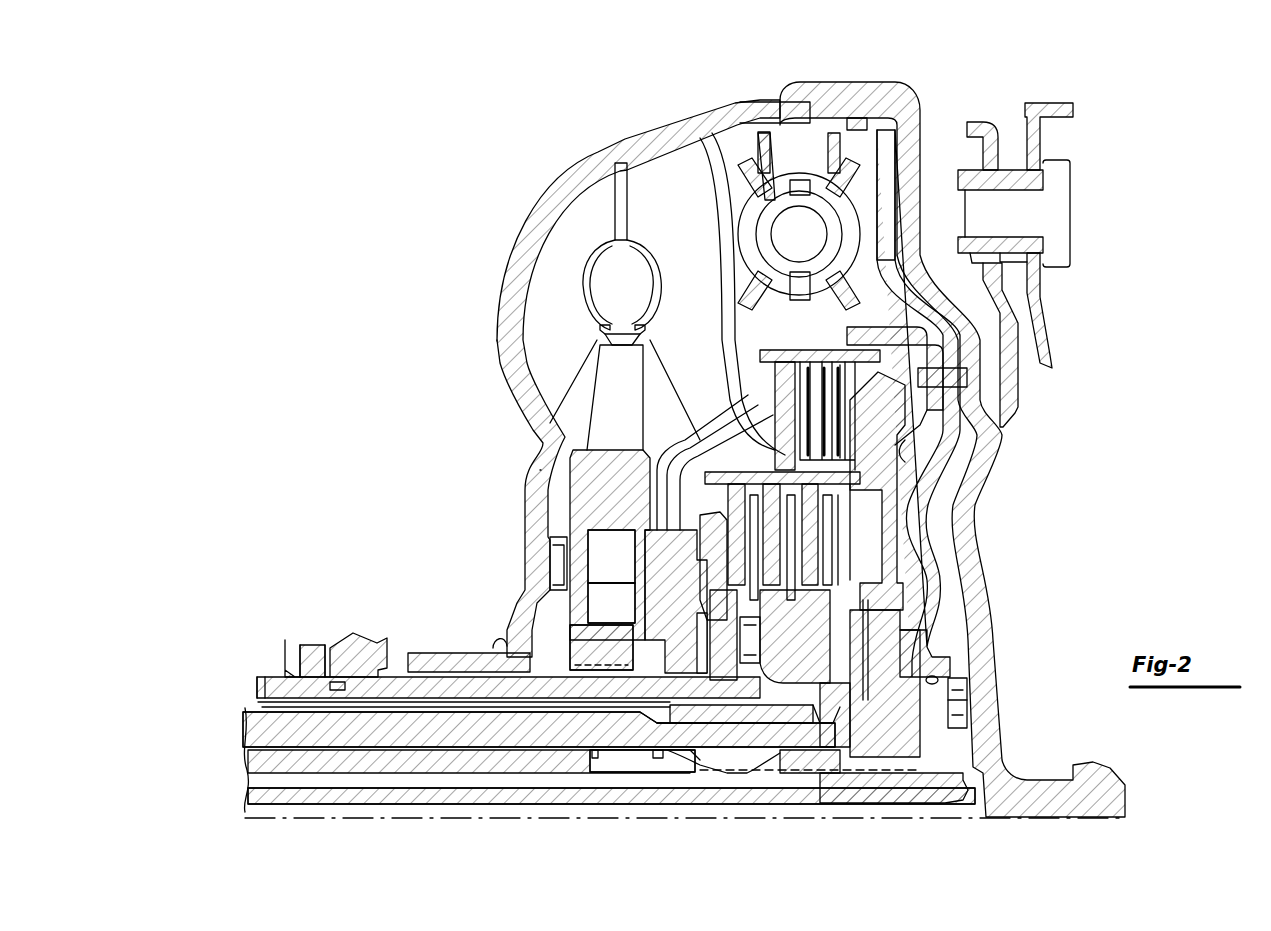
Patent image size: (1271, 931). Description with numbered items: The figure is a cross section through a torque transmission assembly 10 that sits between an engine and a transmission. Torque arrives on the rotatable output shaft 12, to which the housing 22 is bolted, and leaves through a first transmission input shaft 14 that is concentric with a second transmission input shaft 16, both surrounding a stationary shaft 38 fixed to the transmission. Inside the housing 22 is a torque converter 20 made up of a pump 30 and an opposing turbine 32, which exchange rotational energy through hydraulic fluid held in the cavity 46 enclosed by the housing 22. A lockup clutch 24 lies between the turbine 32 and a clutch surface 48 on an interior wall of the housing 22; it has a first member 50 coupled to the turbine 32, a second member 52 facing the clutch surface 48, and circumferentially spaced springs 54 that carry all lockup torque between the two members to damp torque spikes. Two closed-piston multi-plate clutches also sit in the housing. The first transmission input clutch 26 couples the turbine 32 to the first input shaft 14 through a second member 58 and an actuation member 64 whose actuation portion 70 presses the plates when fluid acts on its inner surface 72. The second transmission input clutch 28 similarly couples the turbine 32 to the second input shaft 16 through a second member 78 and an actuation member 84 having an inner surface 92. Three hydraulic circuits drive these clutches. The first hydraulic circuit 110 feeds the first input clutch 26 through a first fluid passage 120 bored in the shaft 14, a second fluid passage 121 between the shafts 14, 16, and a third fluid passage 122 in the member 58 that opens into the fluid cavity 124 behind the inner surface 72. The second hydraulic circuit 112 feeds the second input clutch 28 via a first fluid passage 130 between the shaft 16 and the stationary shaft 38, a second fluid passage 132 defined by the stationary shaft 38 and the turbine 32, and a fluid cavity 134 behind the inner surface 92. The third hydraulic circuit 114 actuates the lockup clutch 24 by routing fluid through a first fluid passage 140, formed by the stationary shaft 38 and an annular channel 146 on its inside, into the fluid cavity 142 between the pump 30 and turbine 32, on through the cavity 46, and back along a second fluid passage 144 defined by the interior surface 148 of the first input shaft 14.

The torque transmission assembly 10 is at (410, 106).
The rotatable output shaft 12 is at (1046, 103).
The first transmission input shaft 14 is at (297, 800).
The second transmission input shaft 16 is at (258, 727).
The torque converter 20 is at (585, 147).
The housing 22 is at (908, 96).
The lockup clutch 24 is at (932, 150).
The first transmission input clutch 26 is at (762, 420).
The second transmission input clutch 28 is at (845, 523).
The pump 30 is at (606, 258).
The turbine 32 is at (652, 162).
The stationary shaft 38 is at (270, 677).
The cavity 46 is at (712, 132).
The clutch surface 48 is at (884, 140).
The first member 50 is at (740, 110).
The second member 52 is at (832, 128).
The springs 54 is at (742, 225).
The second member 58 is at (905, 545).
The actuation member 64 is at (890, 482).
The actuation portion 70 is at (855, 385).
The inner surface 72 is at (900, 428).
The second member 78 is at (650, 620).
The actuation member 84 is at (705, 493).
The inner surface 92 is at (665, 590).
The first hydraulic circuit 110 is at (760, 762).
The second hydraulic circuit 112 is at (655, 712).
The third hydraulic circuit 114 is at (370, 636).
The first fluid passage 120 is at (275, 795).
The second fluid passage 121 is at (700, 760).
The third fluid passage 122 is at (862, 703).
The fluid cavity 124 is at (905, 448).
The first fluid passage 130 is at (265, 697).
The second fluid passage 132 is at (705, 692).
The fluid cavity 134 is at (745, 614).
The first fluid passage 140 is at (400, 690).
The fluid cavity 142 is at (572, 425).
The second fluid passage 144 is at (943, 822).
The annular channel 146 is at (330, 702).
The interior surface 148 is at (908, 806).